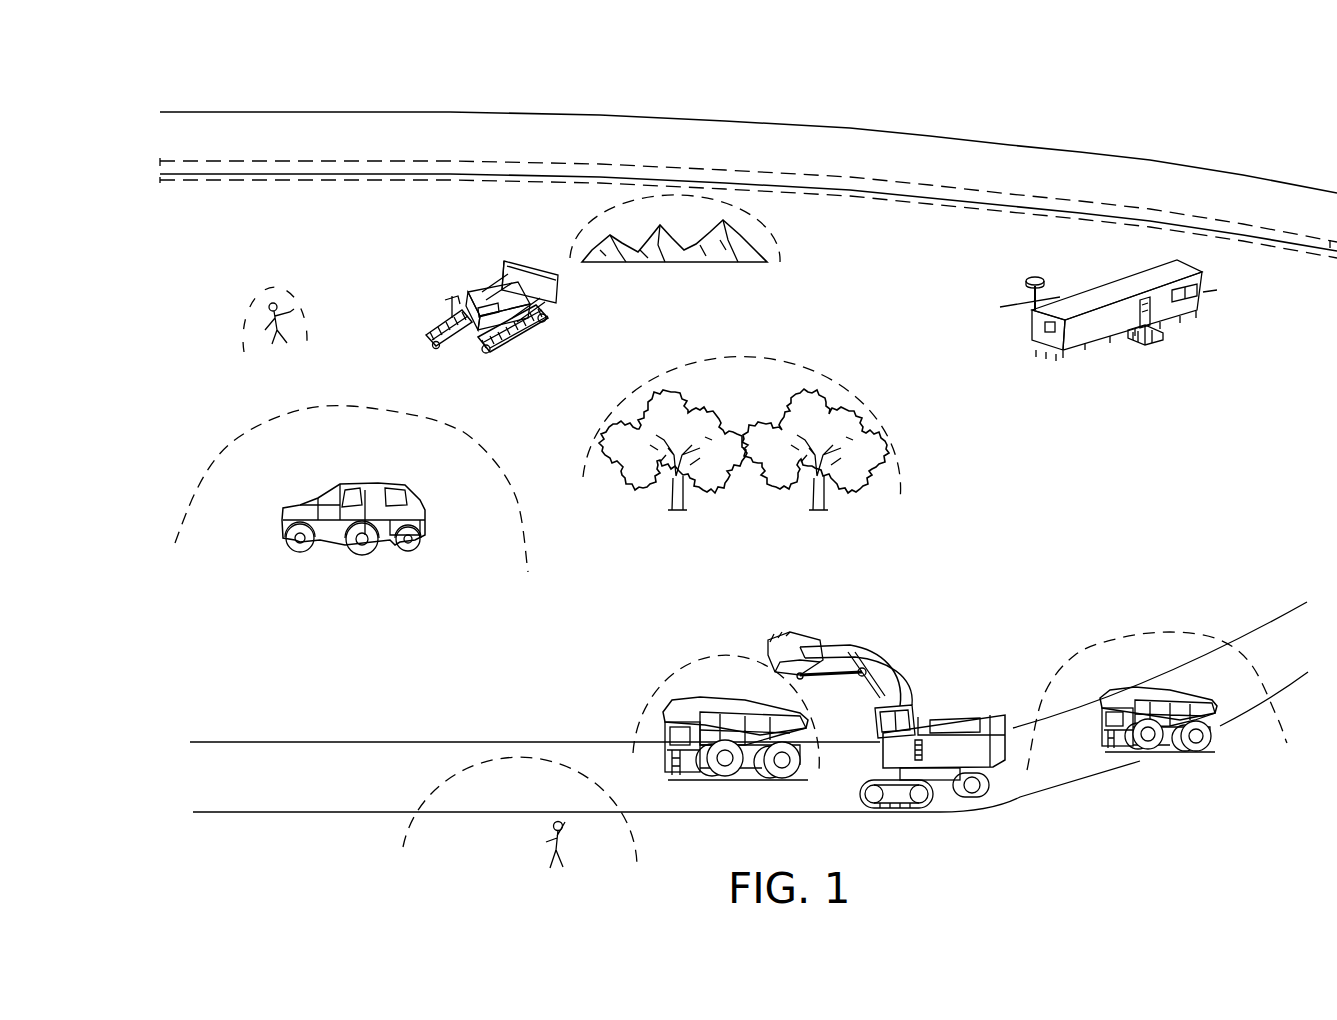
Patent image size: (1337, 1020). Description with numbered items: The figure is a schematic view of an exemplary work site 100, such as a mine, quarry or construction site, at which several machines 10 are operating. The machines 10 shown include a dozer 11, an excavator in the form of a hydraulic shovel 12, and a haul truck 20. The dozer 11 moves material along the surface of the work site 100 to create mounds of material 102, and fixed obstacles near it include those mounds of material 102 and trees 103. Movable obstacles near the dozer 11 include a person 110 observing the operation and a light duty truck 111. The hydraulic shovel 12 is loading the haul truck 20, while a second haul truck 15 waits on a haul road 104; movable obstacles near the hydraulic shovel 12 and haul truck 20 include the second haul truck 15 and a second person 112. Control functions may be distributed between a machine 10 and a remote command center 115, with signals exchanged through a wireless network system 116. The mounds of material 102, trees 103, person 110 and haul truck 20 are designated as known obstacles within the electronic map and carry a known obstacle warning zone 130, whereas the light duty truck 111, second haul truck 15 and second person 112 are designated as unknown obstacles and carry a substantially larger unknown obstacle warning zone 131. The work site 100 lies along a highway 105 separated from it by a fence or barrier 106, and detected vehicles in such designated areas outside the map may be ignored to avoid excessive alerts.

The machines 10 is at (475, 250).
The dozer 11 is at (487, 307).
The hydraulic shovel 12 is at (965, 738).
The second haul truck 15 is at (1140, 697).
The haul truck 20 is at (713, 707).
The work site 100 is at (180, 665).
The mounds of material 102 is at (743, 240).
The trees 103 is at (780, 420).
The haul road 104 is at (1290, 658).
The highway 105 is at (1180, 202).
The fence or barrier 106 is at (967, 187).
The person 110 is at (272, 320).
The light duty truck 111 is at (335, 498).
The second person 112 is at (545, 842).
The command center 115 is at (1085, 300).
The wireless network system 116 is at (1032, 278).
The known obstacle warning zone 130 is at (638, 205).
The unknown obstacle warning zone 131 is at (478, 442).